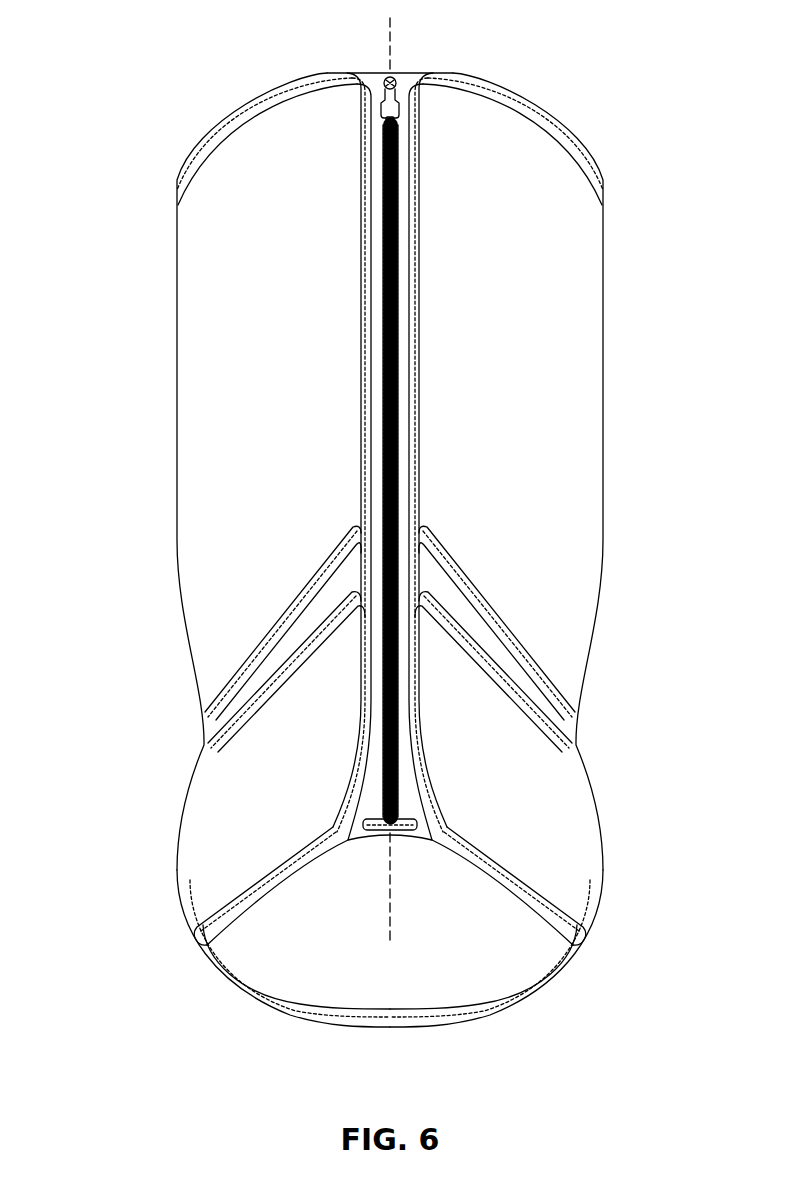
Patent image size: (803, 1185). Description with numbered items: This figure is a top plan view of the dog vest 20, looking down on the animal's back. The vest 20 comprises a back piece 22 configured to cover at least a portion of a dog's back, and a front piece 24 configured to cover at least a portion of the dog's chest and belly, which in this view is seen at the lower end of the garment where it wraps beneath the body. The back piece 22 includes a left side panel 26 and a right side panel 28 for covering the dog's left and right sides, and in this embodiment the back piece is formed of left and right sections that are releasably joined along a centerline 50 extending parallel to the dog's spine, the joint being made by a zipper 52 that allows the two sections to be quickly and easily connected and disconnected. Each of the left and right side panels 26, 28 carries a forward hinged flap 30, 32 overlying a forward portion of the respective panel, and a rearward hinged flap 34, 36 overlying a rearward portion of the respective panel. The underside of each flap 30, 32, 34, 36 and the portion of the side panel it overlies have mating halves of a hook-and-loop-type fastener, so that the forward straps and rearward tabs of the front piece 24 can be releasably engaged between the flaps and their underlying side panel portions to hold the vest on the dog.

The dog vest 20 is at (131, 888).
The back piece 22 is at (610, 536).
The front piece 24 is at (501, 1030).
The left side panel 26 is at (570, 288).
The right side panel 28 is at (212, 276).
The forward hinged flap 30 is at (487, 767).
The forward hinged flap 32 is at (256, 767).
The rearward hinged flap 34 is at (487, 381).
The rearward hinged flap 36 is at (258, 381).
The centerline 50 is at (390, 873).
The zipper 52 is at (337, 41).